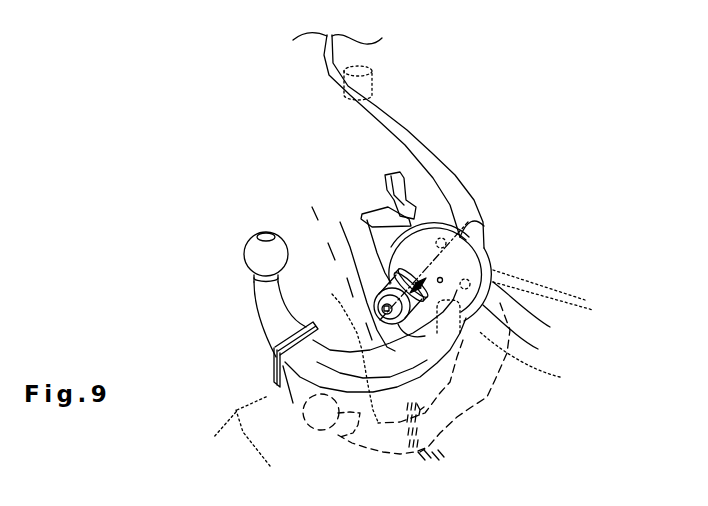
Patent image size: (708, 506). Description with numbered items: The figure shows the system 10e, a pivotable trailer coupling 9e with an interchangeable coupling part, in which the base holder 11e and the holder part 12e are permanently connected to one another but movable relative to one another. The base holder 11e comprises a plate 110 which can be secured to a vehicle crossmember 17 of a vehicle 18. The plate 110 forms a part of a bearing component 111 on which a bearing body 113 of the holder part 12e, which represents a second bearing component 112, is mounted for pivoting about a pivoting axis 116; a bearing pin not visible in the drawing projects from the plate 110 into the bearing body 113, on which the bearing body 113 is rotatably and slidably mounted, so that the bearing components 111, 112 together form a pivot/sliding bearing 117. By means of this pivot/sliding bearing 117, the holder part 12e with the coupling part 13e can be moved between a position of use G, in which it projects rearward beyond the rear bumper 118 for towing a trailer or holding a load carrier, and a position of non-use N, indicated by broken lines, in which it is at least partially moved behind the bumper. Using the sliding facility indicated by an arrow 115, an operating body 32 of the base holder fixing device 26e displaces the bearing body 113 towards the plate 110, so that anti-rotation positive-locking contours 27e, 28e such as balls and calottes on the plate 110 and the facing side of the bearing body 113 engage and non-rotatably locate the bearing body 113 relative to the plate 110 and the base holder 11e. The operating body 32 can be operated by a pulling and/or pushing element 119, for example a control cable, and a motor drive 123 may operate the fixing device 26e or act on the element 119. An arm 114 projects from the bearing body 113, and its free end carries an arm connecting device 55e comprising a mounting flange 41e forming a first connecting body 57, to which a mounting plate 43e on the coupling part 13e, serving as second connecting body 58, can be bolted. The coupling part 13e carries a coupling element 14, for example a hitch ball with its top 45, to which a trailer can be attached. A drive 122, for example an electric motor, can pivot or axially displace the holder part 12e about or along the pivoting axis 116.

The system 10e is at (118, 232).
The trailer coupling 9e is at (586, 157).
The pulling and/or pushing element 119 is at (372, 121).
The base holder 11e is at (448, 210).
The base holder fixing device 26e is at (466, 232).
The drive 123 is at (372, 70).
The pivot/sliding bearing 117 is at (423, 232).
The second bearing component 112 is at (410, 248).
The arrow 115 is at (368, 217).
The plate 110 is at (490, 276).
The operating body 32 is at (408, 271).
The bearing opening 27e is at (462, 248).
The bearing opening 28e is at (470, 266).
The vehicle crossmember 17 is at (585, 300).
The vehicle 18 is at (593, 310).
The bearing component 111 is at (539, 308).
The bearing body 113 is at (528, 331).
The drive 122 is at (539, 358).
The holder part 12e is at (434, 360).
The coupling element 14 is at (256, 249).
The ball top 45 is at (277, 236).
The position of use G is at (251, 228).
The coupling part 13e is at (253, 311).
The second connecting body 58 is at (276, 355).
The arm connecting device 55e is at (270, 376).
The first connecting body 57 is at (283, 394).
The rear bumper 118 is at (305, 192).
The arm 114 is at (339, 350).
The pivoting axis 116 is at (260, 436).
The mounting flange 41e is at (410, 452).
The position of non-use N is at (485, 415).
The mounting plate 43e is at (440, 460).